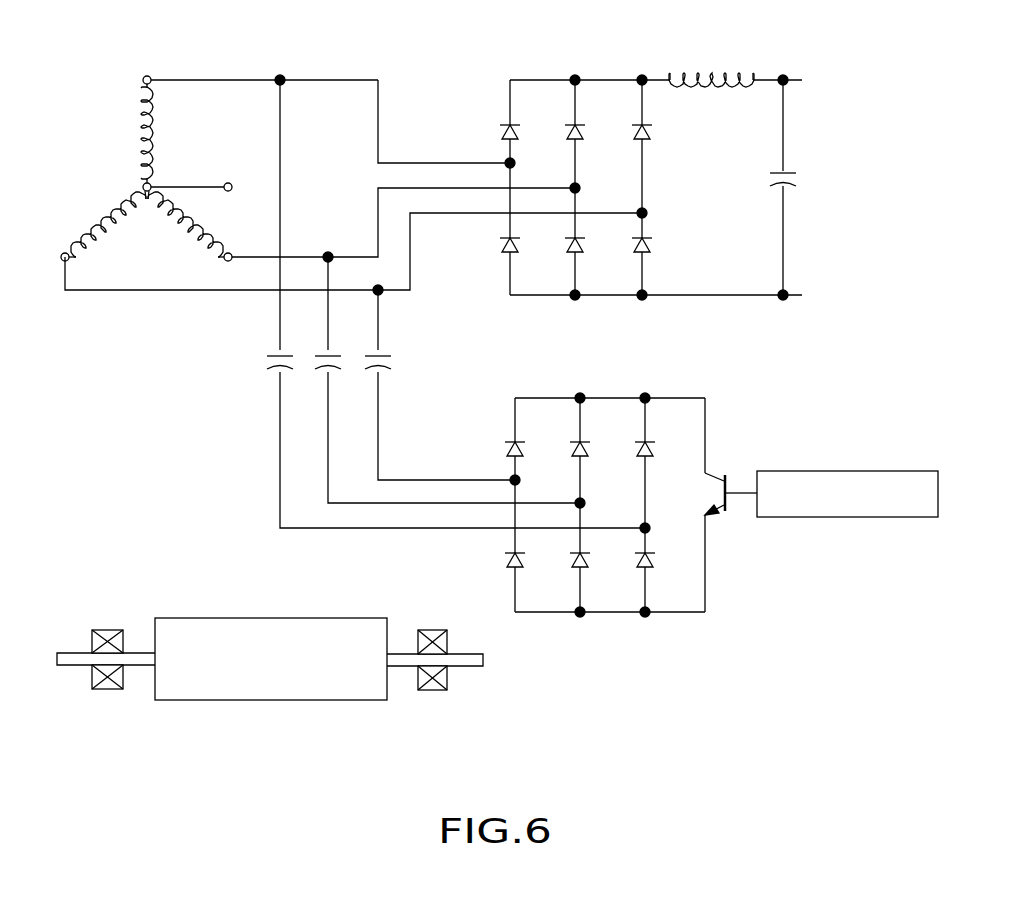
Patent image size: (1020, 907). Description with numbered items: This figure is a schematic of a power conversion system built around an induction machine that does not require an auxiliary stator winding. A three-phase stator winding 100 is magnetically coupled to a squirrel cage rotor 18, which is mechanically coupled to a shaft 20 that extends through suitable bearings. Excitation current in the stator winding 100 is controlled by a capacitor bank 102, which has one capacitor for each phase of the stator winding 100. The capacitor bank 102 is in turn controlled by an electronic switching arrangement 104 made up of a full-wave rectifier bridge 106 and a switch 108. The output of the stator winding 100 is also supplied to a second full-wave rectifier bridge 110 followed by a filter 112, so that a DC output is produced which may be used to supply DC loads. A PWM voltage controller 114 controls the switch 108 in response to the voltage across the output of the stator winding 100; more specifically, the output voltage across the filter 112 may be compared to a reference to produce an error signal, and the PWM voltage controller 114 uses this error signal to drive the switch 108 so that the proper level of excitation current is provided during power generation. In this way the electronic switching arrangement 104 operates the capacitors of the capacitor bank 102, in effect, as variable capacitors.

The squirrel cage rotor 18 is at (282, 702).
The shaft 20 is at (466, 668).
The stator winding 100 is at (178, 161).
The capacitor bank 102 is at (410, 355).
The electronic switching arrangement 104 is at (480, 552).
The full-wave rectifier bridge 106 is at (544, 472).
The switch 108 is at (728, 478).
The full-wave rectifier bridge 110 is at (588, 58).
The filter 112 is at (770, 62).
The PWM voltage controller 114 is at (810, 518).